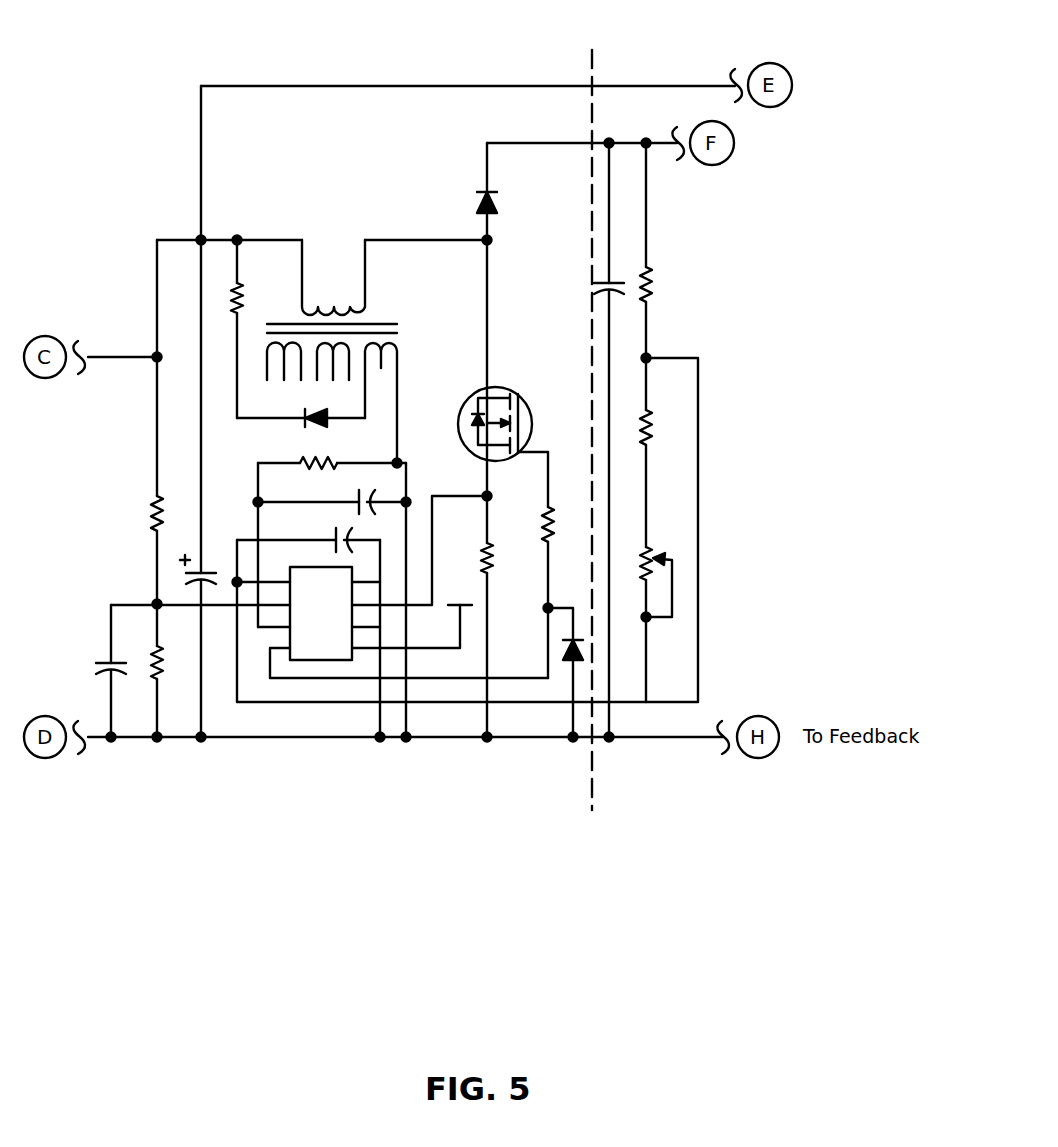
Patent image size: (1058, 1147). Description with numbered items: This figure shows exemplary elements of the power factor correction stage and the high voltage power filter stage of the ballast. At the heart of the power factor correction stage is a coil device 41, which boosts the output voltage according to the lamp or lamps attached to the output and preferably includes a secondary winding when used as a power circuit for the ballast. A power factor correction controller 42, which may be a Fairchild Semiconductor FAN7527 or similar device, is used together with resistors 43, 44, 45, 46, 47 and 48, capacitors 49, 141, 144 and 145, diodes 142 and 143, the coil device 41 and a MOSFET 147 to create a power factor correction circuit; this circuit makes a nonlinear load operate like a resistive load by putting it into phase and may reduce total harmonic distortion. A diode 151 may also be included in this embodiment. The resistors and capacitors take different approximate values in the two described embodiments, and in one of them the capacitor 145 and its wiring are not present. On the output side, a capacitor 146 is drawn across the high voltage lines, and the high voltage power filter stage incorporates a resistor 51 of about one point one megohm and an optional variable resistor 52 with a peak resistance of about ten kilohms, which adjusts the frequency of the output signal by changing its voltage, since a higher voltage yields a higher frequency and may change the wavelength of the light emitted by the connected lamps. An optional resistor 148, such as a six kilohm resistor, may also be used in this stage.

The coil device 41 is at (336, 245).
The power factor correction controller 42 is at (319, 566).
The resistor 43 is at (256, 288).
The resistor 44 is at (560, 507).
The resistor 45 is at (297, 456).
The resistor 46 is at (151, 496).
The resistor 47 is at (147, 655).
The resistor 48 is at (499, 545).
The capacitor 49 is at (95, 661).
The resistor 51 is at (657, 271).
The variable resistor 52 is at (662, 546).
The capacitor 141 is at (212, 567).
The diode 142 is at (298, 410).
The diode 143 is at (507, 197).
The capacitor 144 is at (330, 533).
The capacitor 145 is at (355, 498).
The output capacitor 146 is at (600, 280).
The MOSFET 147 is at (525, 389).
The resistor 148 is at (659, 413).
The diode 151 is at (560, 652).